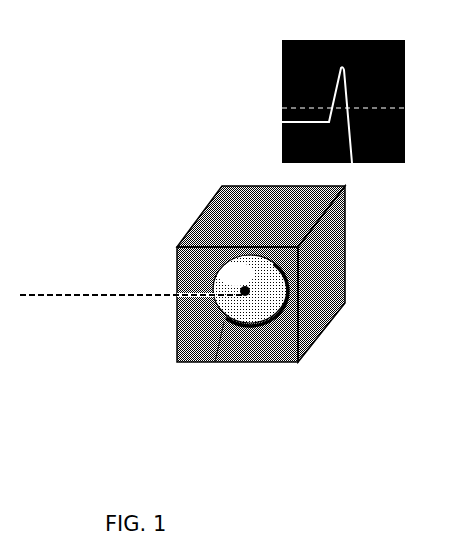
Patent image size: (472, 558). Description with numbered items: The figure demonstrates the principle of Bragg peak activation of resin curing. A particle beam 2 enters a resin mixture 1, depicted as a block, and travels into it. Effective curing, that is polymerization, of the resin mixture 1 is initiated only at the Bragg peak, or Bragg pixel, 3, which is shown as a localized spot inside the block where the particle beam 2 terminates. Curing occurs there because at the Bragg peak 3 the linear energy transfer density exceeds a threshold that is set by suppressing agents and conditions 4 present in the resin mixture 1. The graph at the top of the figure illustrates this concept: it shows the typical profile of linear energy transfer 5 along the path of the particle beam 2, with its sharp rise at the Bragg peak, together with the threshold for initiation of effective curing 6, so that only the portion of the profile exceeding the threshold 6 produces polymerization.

The resin mixture 1 is at (263, 363).
The particle beam 2 is at (132, 280).
The Bragg peak 3 is at (176, 246).
The suppressing agents and conditions 4 is at (215, 362).
The profile of linear energy transfer (LET) 5 is at (360, 163).
The threshold for initiation of effective curing (polymerization) 6 is at (282, 107).